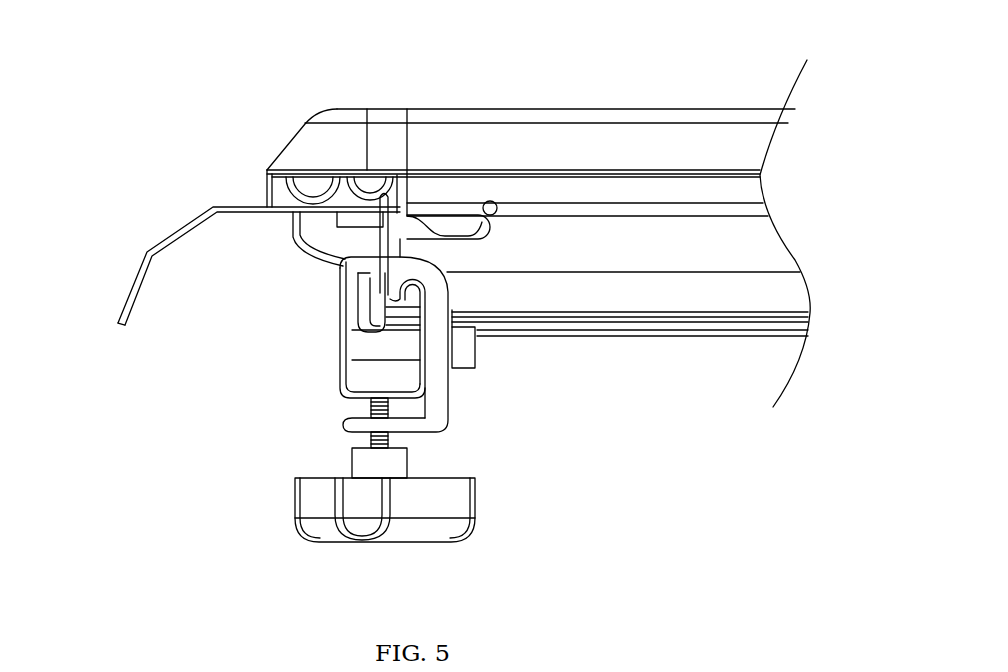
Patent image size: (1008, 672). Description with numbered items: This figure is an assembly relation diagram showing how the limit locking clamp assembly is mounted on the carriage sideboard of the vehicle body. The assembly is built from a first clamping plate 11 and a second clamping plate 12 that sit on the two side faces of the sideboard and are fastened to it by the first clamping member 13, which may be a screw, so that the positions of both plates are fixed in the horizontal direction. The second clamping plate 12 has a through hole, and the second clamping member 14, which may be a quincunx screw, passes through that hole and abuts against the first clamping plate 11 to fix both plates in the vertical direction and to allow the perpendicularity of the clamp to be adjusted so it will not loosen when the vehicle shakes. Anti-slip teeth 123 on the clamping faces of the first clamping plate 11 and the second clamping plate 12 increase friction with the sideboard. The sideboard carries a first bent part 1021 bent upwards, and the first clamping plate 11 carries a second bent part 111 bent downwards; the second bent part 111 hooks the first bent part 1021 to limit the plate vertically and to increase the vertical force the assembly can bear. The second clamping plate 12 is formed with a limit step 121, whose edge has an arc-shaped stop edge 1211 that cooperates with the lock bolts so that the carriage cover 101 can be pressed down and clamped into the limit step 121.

The carriage cover 101 is at (622, 138).
The arc-shaped stop edge 1211 is at (492, 203).
The limit step 121 is at (450, 208).
The anti-slip teeth 123 is at (380, 265).
The second bent part 111 is at (372, 290).
The first bent part 1021 is at (367, 300).
The first clamping plate 11 is at (348, 317).
The second clamping plate 12 is at (433, 402).
The first clamping member 13 is at (467, 348).
The second clamping member 14 is at (407, 500).